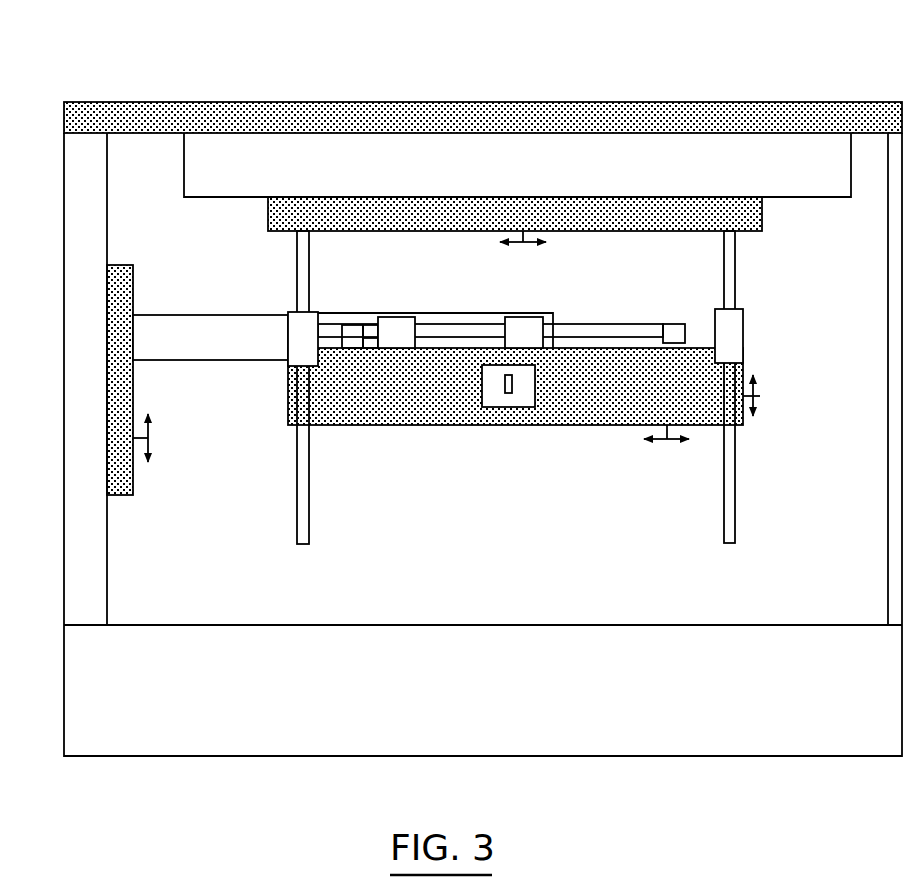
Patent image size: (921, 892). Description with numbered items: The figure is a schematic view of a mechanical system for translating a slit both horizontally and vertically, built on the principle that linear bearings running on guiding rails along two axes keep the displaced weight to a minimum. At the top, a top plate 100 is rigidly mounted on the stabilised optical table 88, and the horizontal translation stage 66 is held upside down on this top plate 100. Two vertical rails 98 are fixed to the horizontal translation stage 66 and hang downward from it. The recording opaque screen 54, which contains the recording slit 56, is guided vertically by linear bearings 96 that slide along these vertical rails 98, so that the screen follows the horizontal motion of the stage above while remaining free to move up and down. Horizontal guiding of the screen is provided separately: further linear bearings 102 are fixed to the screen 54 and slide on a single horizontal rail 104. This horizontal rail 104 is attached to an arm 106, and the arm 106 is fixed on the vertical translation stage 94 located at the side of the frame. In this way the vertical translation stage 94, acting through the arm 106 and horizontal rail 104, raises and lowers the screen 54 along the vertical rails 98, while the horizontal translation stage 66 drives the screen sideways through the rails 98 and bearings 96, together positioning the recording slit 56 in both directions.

The recording opaque screen 54 is at (427, 426).
The recording slit 56 is at (511, 394).
The horizontal translation stage 66 is at (763, 226).
The stabilised optical table 88 is at (612, 624).
The vertical translation stage 94 is at (133, 478).
The linear bearings 96 is at (318, 312).
The vertical rails 98 is at (309, 537).
The top plate 100 is at (525, 102).
The linear bearings 102 is at (403, 316).
The horizontal rail 104 is at (627, 324).
The arm 106 is at (210, 314).